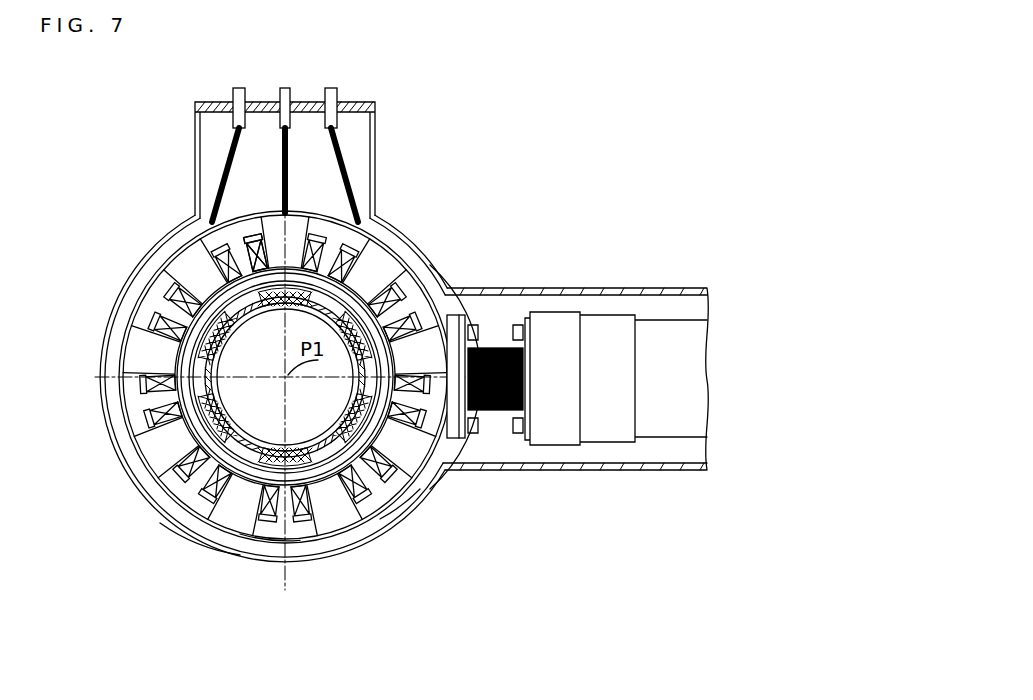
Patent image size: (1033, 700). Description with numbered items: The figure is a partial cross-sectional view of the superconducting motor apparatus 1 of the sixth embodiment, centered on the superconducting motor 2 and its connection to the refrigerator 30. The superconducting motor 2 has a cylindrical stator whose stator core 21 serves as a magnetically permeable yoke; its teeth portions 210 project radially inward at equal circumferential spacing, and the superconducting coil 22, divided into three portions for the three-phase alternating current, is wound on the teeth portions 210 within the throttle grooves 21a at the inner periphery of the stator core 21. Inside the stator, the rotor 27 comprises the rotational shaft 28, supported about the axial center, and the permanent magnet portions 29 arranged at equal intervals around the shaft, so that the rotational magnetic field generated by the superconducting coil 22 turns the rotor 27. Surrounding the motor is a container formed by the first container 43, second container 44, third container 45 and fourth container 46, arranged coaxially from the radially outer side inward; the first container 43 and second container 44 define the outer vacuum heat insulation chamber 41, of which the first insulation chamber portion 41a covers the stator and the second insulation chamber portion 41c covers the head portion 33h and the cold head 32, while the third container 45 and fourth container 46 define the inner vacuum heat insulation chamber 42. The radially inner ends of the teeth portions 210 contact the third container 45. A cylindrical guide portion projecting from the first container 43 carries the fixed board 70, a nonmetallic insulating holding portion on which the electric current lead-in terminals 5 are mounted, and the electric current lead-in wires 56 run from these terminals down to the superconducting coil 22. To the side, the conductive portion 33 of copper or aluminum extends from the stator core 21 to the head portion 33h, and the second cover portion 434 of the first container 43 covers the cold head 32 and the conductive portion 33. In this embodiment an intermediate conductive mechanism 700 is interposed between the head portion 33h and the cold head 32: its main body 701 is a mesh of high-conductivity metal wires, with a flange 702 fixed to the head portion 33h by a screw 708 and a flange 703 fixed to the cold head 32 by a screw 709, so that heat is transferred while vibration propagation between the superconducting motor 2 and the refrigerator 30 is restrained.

The superconducting motor apparatus 1 is at (246, 309).
The superconducting motor 2 is at (246, 309).
The electric current lead-in terminals 5 is at (235, 93).
The stator core 21 is at (300, 411).
The throttle grooves 21a is at (398, 512).
The superconducting coil 22 is at (375, 532).
The rotor 27 is at (285, 411).
The rotational shaft 28 is at (228, 406).
The permanent magnet portions 29 is at (356, 318).
The refrigerator 30 is at (597, 370).
The cold head 32 is at (597, 370).
The conductive portion 33 is at (475, 356).
The head portion 33h is at (458, 318).
The outer vacuum heat insulation chamber 41 is at (188, 240).
The first insulation chamber portion 41a is at (247, 586).
The second insulation chamber portion 41c is at (690, 290).
The inner vacuum heat insulation chamber 42 is at (235, 518).
The first container 43 is at (125, 503).
The second container 44 is at (130, 448).
The third container 45 is at (192, 366).
The fourth container 46 is at (190, 352).
The electric current lead-in wires 56 is at (222, 152).
The fixed board 70 is at (352, 107).
The teeth portions 210 is at (294, 236).
The second cover portion 434 is at (622, 470).
The intermediate conductive mechanism 700 is at (587, 359).
The main body 701 is at (587, 359).
The flange 702 is at (490, 347).
The flange 703 is at (555, 310).
The screw 708 is at (478, 436).
The screw 709 is at (520, 330).